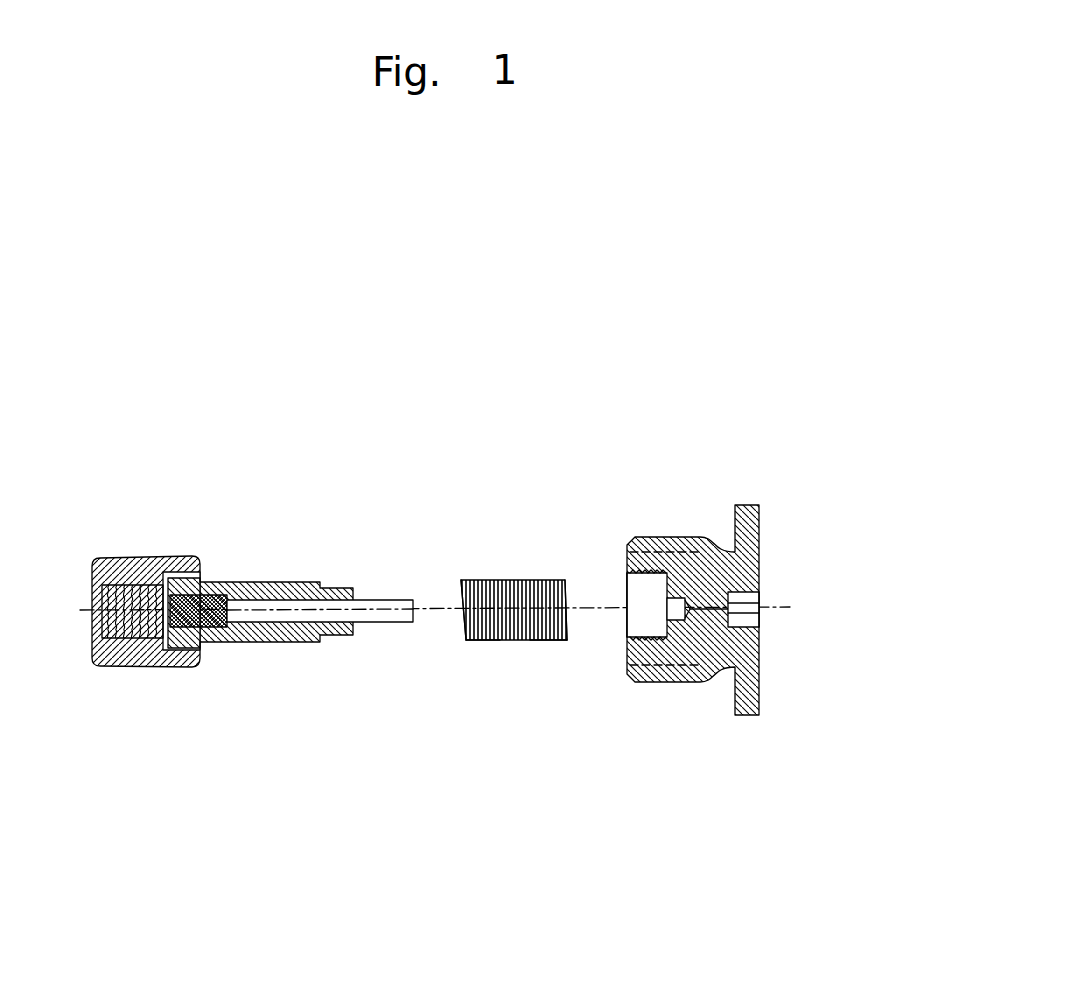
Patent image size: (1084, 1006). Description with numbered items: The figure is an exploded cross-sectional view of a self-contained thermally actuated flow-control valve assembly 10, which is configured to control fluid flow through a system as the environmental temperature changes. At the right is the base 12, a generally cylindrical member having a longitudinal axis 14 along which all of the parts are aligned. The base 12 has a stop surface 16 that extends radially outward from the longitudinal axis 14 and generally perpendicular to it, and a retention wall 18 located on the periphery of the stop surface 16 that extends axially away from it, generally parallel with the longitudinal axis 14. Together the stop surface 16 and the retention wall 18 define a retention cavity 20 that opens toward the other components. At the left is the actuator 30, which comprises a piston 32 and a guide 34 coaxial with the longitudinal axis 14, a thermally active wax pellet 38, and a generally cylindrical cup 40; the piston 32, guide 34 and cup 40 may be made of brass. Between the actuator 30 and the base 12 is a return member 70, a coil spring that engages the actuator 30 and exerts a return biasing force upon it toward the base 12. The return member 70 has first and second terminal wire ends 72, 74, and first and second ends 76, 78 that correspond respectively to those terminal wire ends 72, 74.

The valve assembly 10 is at (442, 410).
The base 12 is at (731, 624).
The longitudinal axis 14 is at (790, 607).
The stop surface 16 is at (660, 630).
The retention wall 18 is at (633, 577).
The retention cavity 20 is at (620, 602).
The actuator 30 is at (241, 586).
The piston 32 is at (385, 600).
The guide 34 is at (250, 582).
The thermally active wax pellet 38 is at (120, 603).
The cup 40 is at (142, 553).
The return member 70 is at (502, 547).
The first terminal wire end 72 is at (464, 620).
The second terminal wire end 74 is at (560, 647).
The first end 76 is at (472, 650).
The second end 78 is at (567, 618).